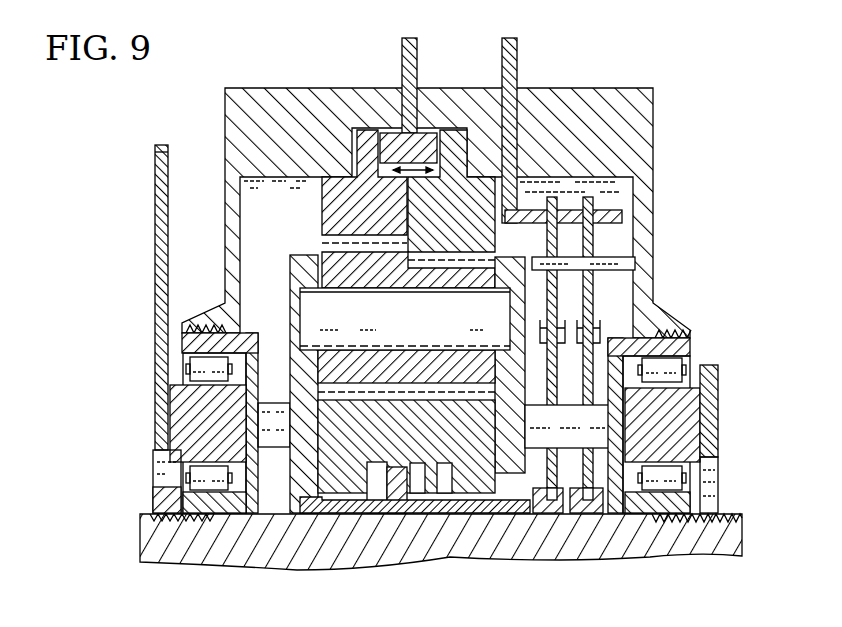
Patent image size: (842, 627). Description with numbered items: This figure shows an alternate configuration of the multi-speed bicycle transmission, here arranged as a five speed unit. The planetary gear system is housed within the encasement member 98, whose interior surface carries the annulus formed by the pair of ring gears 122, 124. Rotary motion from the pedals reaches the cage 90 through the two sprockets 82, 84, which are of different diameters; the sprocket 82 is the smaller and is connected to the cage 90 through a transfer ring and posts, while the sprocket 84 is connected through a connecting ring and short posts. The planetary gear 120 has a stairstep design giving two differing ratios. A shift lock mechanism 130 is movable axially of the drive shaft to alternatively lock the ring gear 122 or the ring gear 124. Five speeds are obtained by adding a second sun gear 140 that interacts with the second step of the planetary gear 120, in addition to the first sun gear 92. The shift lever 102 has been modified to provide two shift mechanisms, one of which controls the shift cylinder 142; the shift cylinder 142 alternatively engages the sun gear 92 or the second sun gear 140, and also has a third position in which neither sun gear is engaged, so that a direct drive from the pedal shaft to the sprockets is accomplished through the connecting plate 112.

The encasement member 98 is at (630, 75).
The shift lock mechanism 130 is at (425, 142).
The ring gear 124 is at (463, 197).
The shift lever 102 is at (517, 75).
The sprocket 84 is at (155, 208).
The ring gear 122 is at (332, 207).
The planetary gear 120 is at (332, 260).
The cage 90 is at (297, 270).
The connecting plate 112 is at (612, 338).
The sprocket 82 is at (717, 403).
The sun gear 92 is at (336, 500).
The shift cylinder 142 is at (438, 492).
The second sun gear 140 is at (482, 482).